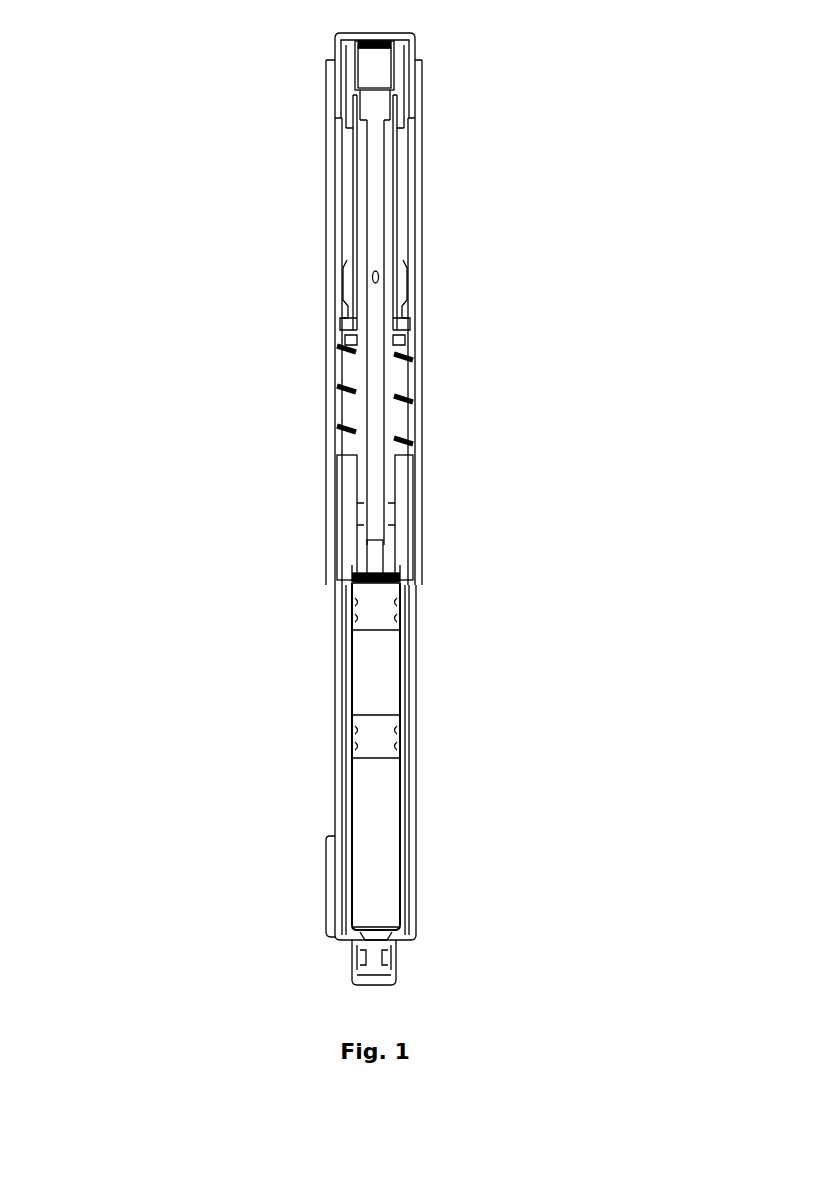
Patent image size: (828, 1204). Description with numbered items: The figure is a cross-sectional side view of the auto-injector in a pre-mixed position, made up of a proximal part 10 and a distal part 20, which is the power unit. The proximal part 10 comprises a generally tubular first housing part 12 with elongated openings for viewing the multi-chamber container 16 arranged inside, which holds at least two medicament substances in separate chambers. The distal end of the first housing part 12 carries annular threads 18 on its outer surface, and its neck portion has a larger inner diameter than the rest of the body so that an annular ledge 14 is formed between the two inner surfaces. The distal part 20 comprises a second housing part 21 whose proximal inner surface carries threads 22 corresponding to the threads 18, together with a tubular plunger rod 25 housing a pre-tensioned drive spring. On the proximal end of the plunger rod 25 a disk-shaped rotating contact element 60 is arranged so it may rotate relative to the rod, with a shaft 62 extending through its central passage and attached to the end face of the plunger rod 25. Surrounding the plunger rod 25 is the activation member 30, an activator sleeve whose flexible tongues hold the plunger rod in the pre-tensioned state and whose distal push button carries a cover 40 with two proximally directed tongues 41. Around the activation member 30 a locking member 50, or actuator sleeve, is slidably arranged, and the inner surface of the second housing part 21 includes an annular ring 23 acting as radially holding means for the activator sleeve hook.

The proximal part 10 is at (221, 760).
The first housing part 12 is at (413, 705).
The annular ledge 14 is at (405, 504).
The multi-chamber container 16 is at (379, 822).
The annular threads 18 is at (332, 550).
The distal part 20 is at (217, 314).
The second housing part 21 is at (332, 410).
The threads 22 is at (410, 405).
The annular ring 23 is at (410, 123).
The plunger rod 25 is at (378, 353).
The activation member 30 is at (350, 183).
The cover 40 is at (400, 27).
The tongues 41 is at (410, 70).
The locking member 50 is at (408, 275).
The rotating contact element 60 is at (355, 577).
The shaft 62 is at (409, 568).